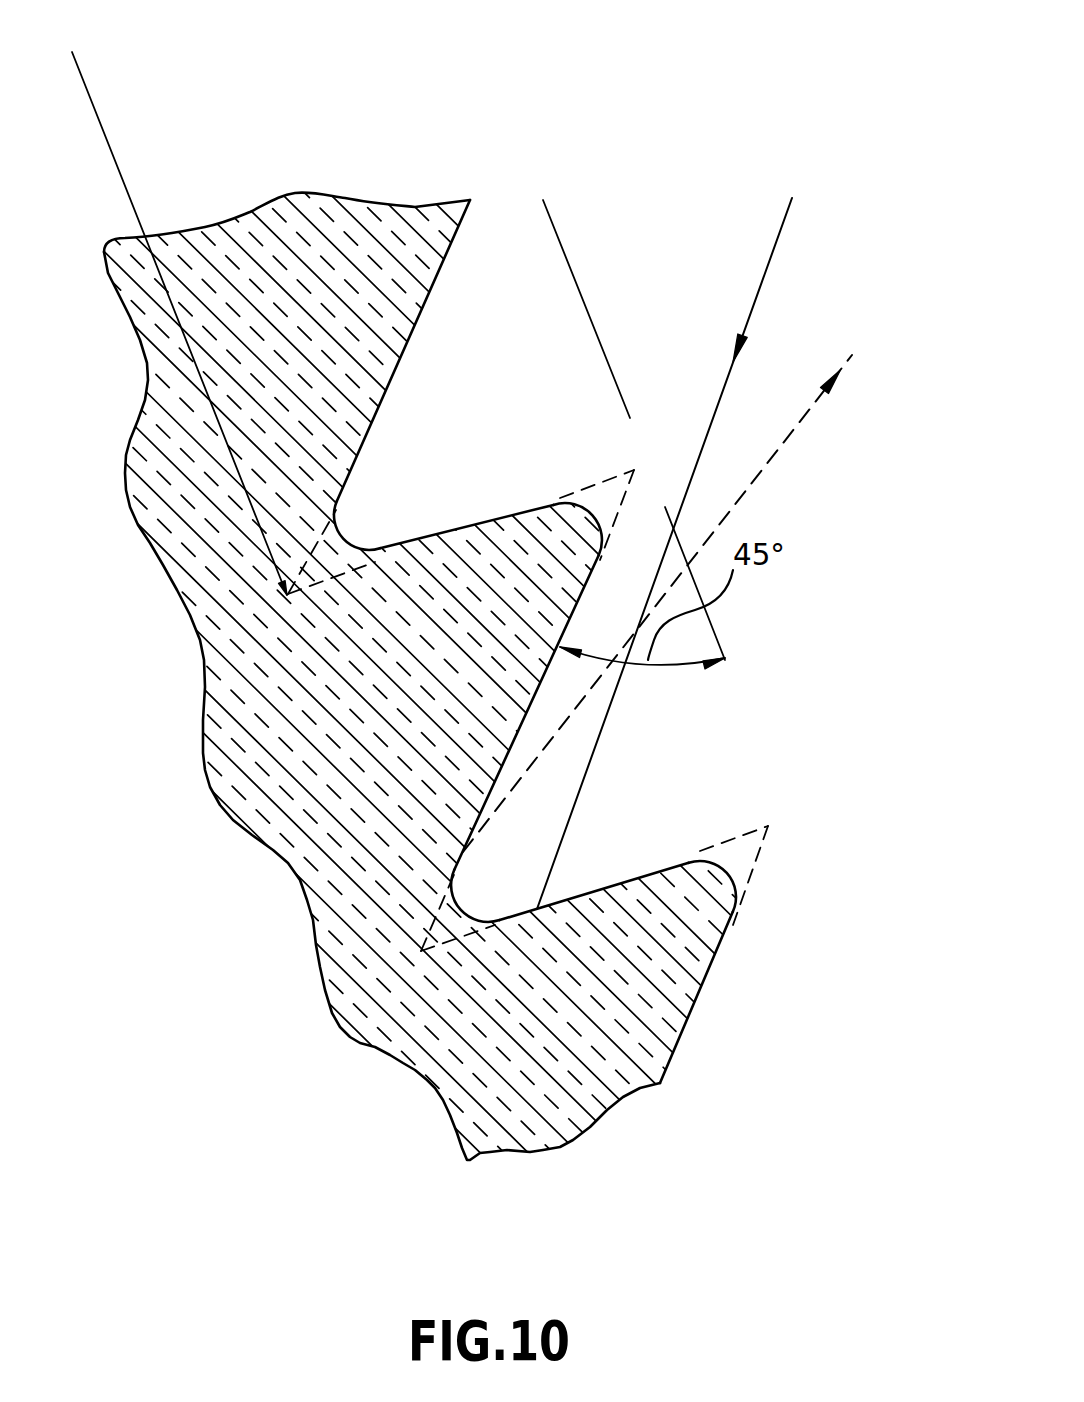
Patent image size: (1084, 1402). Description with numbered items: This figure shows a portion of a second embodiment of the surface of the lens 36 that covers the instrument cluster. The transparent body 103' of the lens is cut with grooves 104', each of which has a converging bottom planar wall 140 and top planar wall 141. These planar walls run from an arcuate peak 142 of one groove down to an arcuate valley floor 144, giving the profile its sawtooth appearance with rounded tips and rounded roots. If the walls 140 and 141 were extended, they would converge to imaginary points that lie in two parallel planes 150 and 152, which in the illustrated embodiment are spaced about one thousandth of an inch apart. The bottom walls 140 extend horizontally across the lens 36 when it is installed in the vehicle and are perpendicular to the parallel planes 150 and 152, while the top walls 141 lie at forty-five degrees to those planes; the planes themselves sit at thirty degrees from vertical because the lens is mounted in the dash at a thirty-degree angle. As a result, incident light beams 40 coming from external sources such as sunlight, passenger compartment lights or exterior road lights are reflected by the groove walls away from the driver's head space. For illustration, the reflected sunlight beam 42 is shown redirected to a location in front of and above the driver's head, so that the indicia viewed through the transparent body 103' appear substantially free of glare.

The lens 36 is at (308, 184).
The incident light beams 40 is at (763, 275).
The reflected sunlight beam 42 is at (787, 440).
The transparent body 103' is at (542, 651).
The grooves 104' is at (528, 606).
The bottom planar walls 140 is at (478, 523).
The top planar walls 141 is at (397, 372).
The arcuate peaks 142 is at (590, 505).
The arcuate valley floors 144 is at (346, 543).
The parallel plane 150 is at (552, 215).
The parallel plane 152 is at (92, 101).